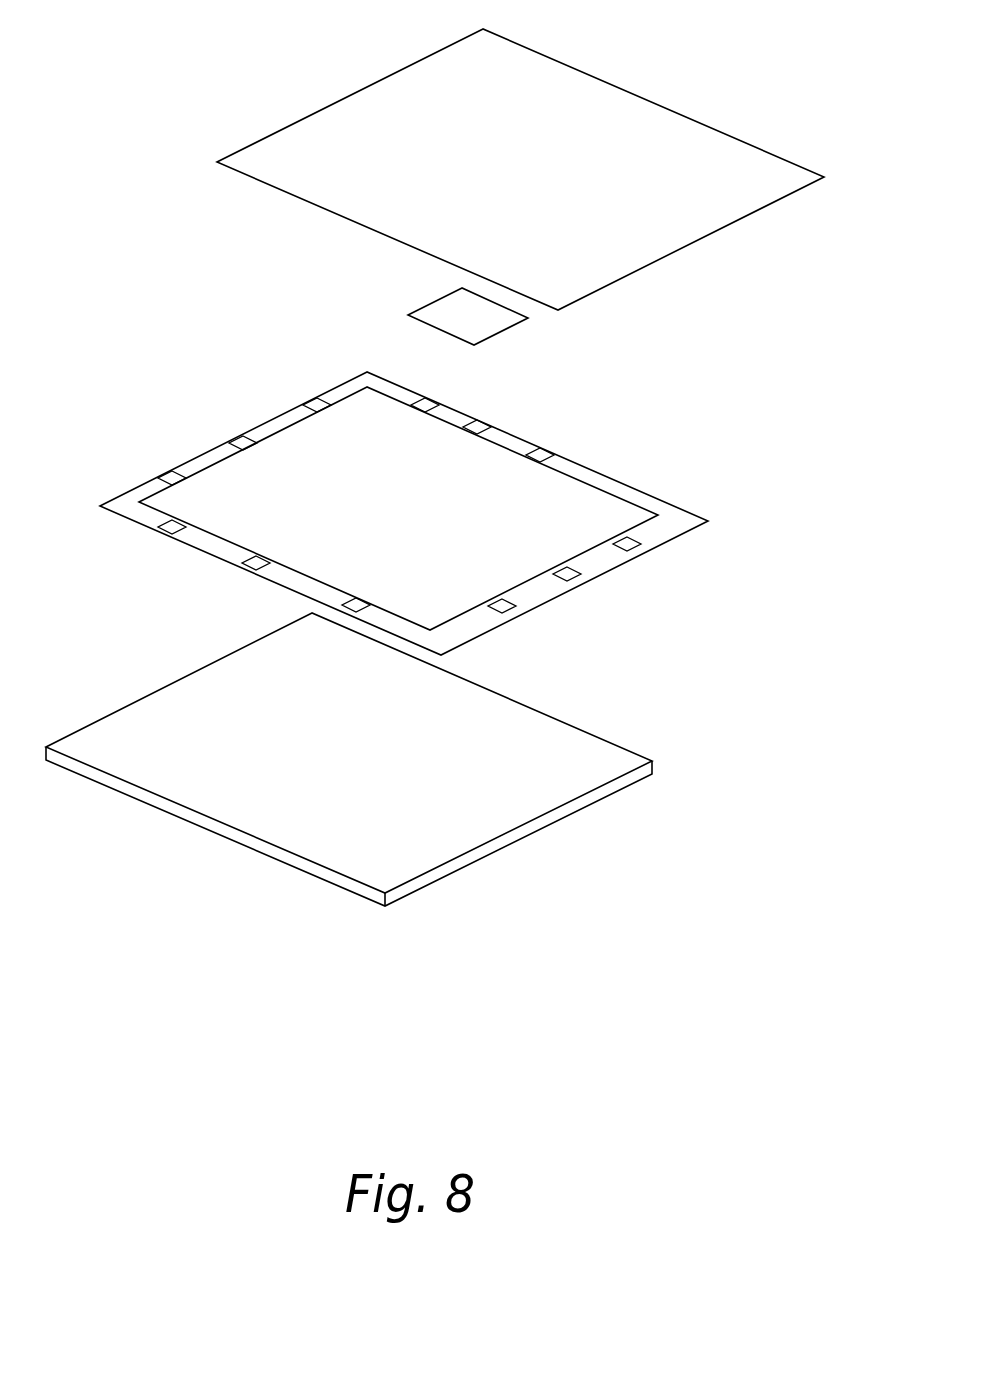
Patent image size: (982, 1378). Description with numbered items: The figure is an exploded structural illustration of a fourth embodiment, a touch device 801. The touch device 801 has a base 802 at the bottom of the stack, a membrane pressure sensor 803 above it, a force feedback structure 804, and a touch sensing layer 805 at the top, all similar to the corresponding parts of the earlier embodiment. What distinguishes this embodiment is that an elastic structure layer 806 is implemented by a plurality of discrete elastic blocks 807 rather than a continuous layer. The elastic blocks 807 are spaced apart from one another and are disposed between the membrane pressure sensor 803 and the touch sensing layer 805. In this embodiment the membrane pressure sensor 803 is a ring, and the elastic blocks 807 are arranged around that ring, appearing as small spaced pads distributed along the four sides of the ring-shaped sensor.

The touch device 801 is at (202, 372).
The base 802 is at (517, 810).
The membrane pressure sensor 803 is at (597, 563).
The force feedback structure 804 is at (427, 315).
The touch sensing layer 805 is at (712, 215).
The elastic structure layer 806 is at (310, 394).
The elastic blocks 807 is at (547, 455).